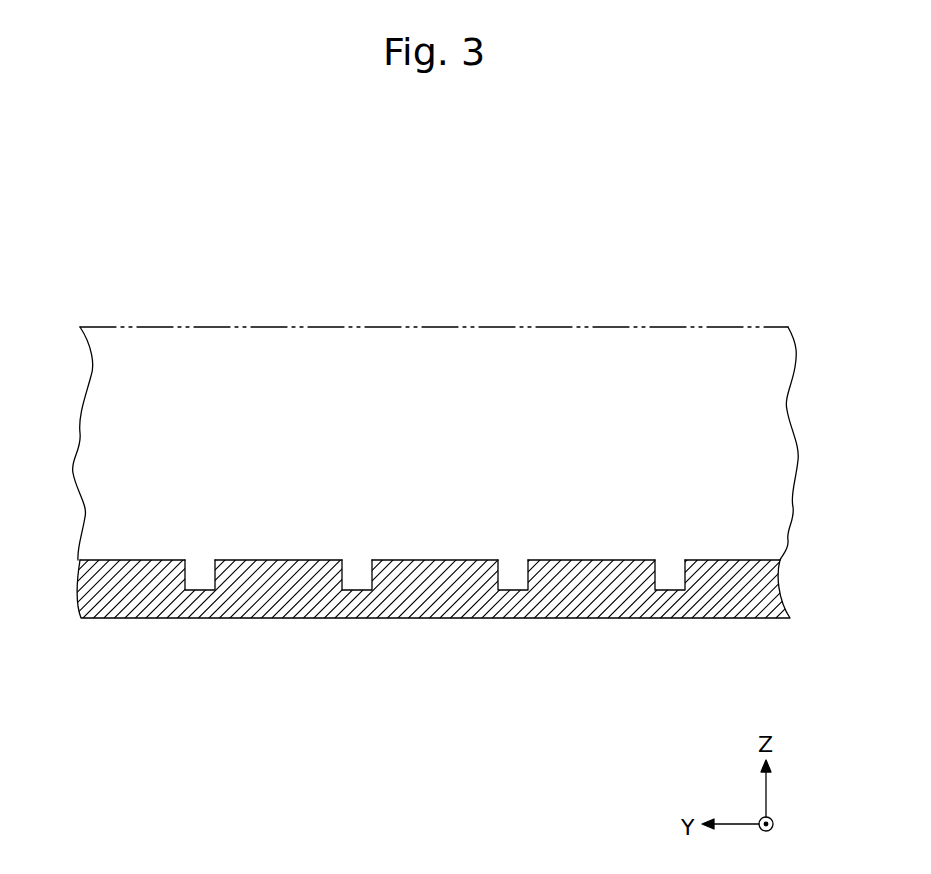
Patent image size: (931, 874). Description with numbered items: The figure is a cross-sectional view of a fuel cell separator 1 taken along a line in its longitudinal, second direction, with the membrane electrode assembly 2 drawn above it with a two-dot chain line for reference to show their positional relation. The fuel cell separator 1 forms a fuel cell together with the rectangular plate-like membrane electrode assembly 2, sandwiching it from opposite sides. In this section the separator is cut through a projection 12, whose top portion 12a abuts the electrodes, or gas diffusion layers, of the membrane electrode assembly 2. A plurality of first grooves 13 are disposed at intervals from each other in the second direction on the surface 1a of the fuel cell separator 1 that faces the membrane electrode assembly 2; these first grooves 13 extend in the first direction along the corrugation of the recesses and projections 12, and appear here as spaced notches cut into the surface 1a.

The fuel cell separator 1 is at (197, 248).
The surface 1a is at (703, 560).
The membrane electrode assembly 2 is at (650, 362).
The projection 12 is at (283, 592).
The top portion 12a is at (437, 560).
The first groove 13 is at (365, 582).